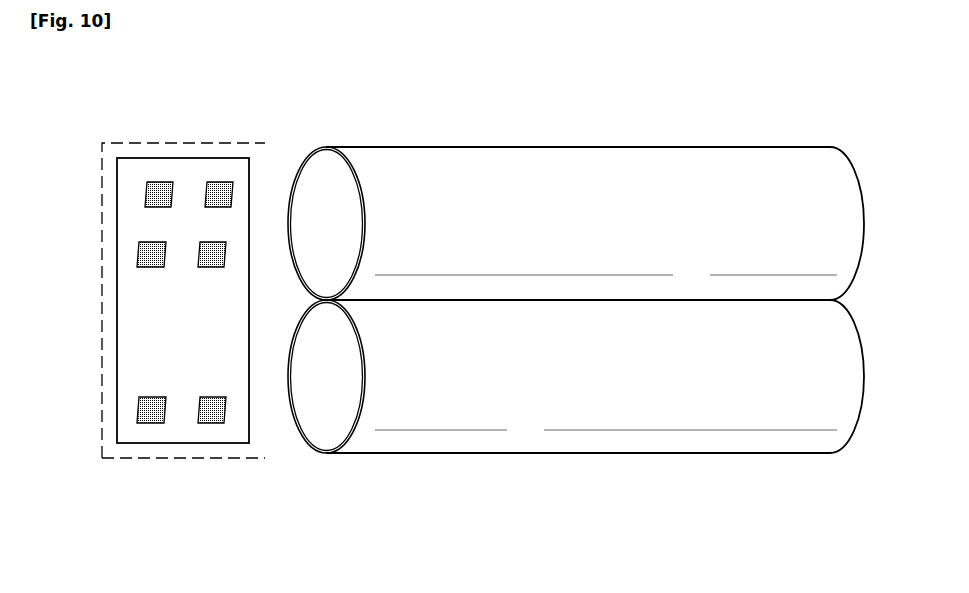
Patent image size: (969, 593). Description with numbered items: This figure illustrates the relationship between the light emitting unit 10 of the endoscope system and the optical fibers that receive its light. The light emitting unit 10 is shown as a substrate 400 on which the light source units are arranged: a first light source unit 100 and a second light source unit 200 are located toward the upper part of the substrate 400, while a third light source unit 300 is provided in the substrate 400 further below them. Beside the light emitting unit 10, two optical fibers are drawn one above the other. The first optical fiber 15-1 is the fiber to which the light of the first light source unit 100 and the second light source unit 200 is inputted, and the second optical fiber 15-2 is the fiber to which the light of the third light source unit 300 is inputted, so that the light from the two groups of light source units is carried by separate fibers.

The light emitting unit 10 is at (143, 142).
The substrate 400 is at (214, 157).
The first light source unit 100 is at (145, 193).
The second light source unit 200 is at (139, 252).
The third light source unit 300 is at (139, 409).
The first optical fiber 15-1 is at (604, 147).
The second optical fiber 15-2 is at (708, 460).